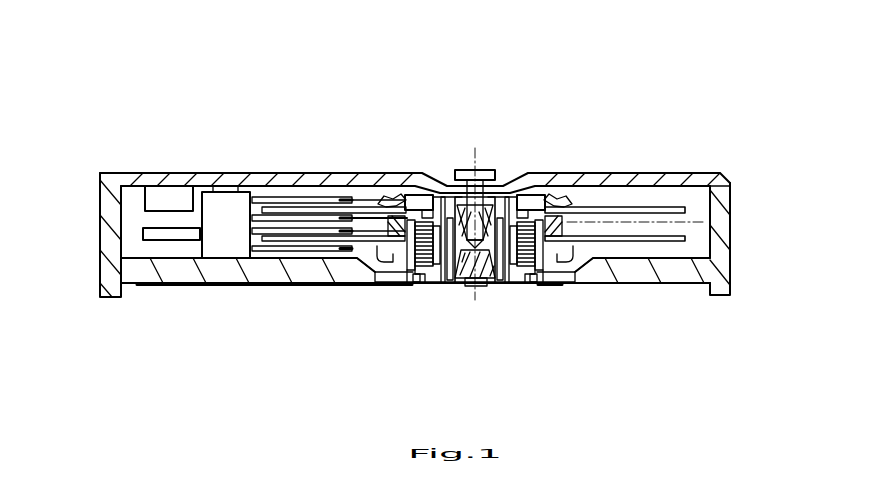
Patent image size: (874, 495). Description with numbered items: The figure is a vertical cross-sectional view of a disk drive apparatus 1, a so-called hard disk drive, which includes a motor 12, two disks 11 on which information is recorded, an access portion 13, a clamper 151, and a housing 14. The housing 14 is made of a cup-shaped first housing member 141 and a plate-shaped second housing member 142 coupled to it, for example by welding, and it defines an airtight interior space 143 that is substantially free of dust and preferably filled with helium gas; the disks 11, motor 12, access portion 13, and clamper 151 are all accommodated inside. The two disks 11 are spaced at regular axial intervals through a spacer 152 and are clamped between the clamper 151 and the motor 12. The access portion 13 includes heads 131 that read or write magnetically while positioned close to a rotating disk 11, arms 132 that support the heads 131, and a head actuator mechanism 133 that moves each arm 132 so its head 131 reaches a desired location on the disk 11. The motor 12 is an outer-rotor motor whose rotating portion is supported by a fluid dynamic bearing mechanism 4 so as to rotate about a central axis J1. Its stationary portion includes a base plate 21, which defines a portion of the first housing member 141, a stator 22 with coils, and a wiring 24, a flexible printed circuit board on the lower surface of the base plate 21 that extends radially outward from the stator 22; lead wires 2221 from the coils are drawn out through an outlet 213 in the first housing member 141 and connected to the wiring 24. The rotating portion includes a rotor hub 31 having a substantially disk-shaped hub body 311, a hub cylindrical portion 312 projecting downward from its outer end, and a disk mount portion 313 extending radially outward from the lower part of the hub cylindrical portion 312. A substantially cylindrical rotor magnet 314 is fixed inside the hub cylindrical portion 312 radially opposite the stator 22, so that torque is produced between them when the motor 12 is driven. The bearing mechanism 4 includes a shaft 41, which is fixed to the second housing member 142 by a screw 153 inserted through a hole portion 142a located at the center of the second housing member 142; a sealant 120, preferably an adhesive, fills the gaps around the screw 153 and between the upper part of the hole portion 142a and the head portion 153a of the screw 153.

The disk drive apparatus 1 is at (70, 106).
The disk 11 is at (662, 176).
The motor 12 is at (604, 182).
The access portion 13 is at (224, 81).
The head 131 is at (338, 197).
The arm 132 is at (272, 192).
The head actuator mechanism 133 is at (210, 186).
The housing 14 is at (785, 106).
The first housing member 141 is at (675, 284).
The second housing member 142 is at (690, 206).
The hole portion 142a is at (520, 192).
The interior space 143 is at (690, 236).
The clamper 151 is at (590, 196).
The spacer 152 is at (758, 220).
The screw 153 is at (489, 162).
The head portion 153a is at (452, 195).
The sealant 120 is at (415, 195).
The central axis J1 is at (473, 148).
The base plate 21 is at (753, 257).
The stator 22 is at (418, 285).
The outlet 213 is at (429, 287).
The lead wires 2221 is at (425, 286).
The wiring 24 is at (250, 288).
The rotor hub 31 is at (319, 71).
The hub body 311 is at (372, 200).
The hub cylindrical portion 312 is at (386, 216).
The disk mount portion 313 is at (572, 260).
The rotor magnet 314 is at (404, 262).
The fluid dynamic bearing mechanism 4 is at (493, 287).
The shaft 41 is at (453, 287).